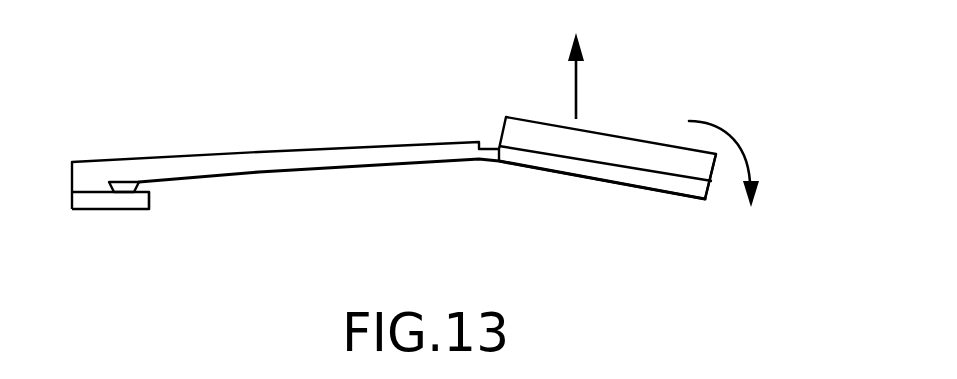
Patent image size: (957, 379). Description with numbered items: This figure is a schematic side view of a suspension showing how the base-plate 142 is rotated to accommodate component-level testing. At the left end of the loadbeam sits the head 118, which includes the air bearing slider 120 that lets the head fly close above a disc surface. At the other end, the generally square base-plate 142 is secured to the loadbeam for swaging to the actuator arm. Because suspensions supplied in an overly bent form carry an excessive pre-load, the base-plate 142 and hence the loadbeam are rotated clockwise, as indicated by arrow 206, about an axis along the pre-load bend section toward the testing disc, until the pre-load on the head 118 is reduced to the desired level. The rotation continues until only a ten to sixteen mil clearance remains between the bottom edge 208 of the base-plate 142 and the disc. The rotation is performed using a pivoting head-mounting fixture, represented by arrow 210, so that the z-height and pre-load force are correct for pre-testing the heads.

The head 118 is at (92, 253).
The air bearing slider 120 is at (123, 212).
The base-plate 142 is at (623, 130).
The arrow 206 is at (747, 150).
The bottom edge 208 is at (703, 196).
The arrow 210 is at (577, 82).